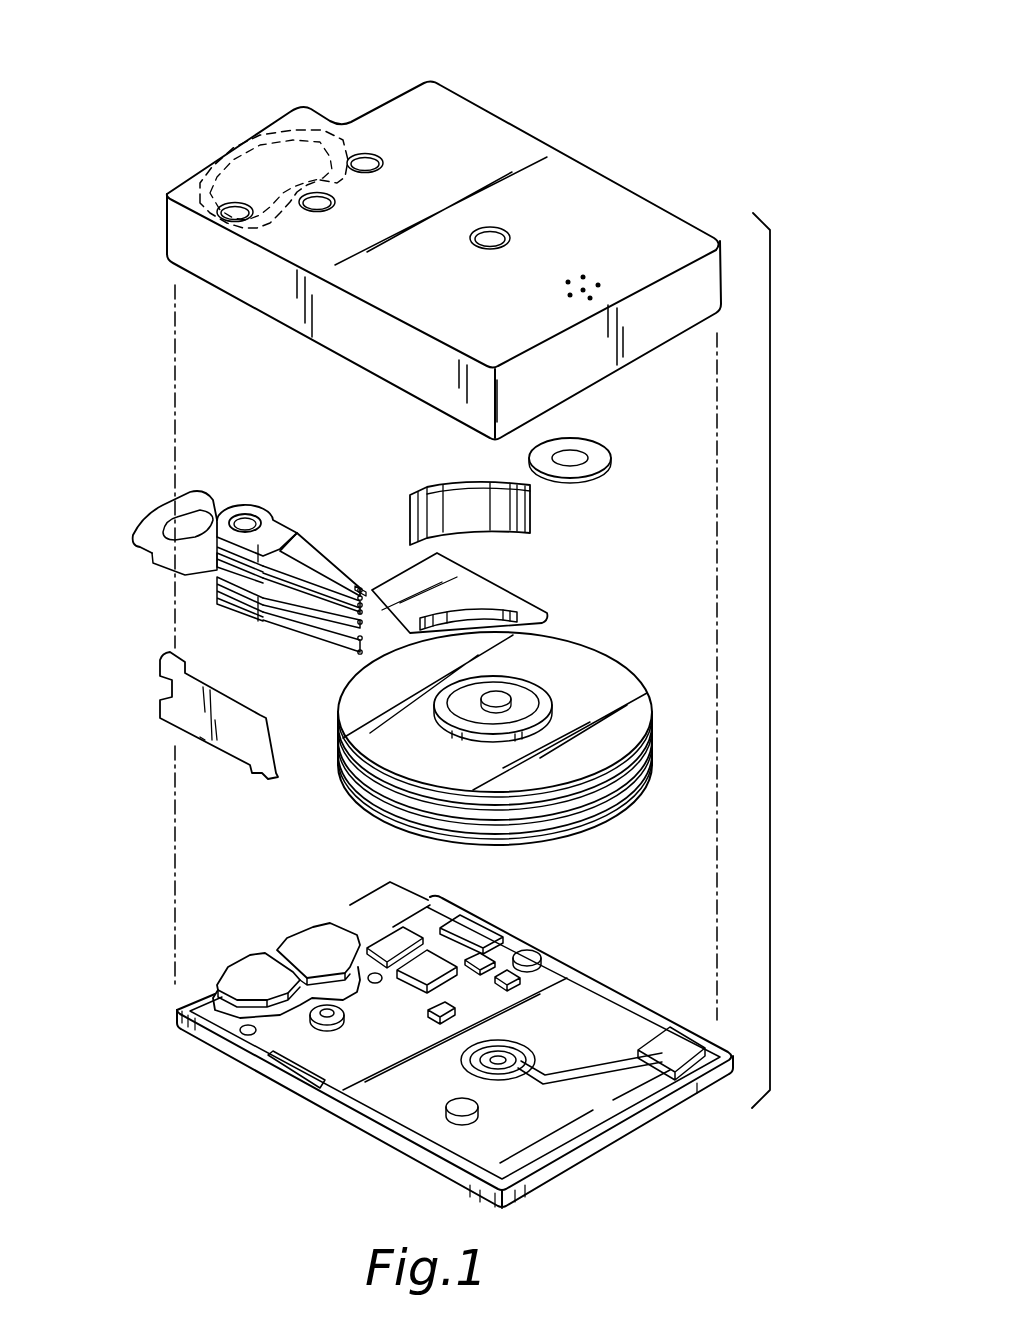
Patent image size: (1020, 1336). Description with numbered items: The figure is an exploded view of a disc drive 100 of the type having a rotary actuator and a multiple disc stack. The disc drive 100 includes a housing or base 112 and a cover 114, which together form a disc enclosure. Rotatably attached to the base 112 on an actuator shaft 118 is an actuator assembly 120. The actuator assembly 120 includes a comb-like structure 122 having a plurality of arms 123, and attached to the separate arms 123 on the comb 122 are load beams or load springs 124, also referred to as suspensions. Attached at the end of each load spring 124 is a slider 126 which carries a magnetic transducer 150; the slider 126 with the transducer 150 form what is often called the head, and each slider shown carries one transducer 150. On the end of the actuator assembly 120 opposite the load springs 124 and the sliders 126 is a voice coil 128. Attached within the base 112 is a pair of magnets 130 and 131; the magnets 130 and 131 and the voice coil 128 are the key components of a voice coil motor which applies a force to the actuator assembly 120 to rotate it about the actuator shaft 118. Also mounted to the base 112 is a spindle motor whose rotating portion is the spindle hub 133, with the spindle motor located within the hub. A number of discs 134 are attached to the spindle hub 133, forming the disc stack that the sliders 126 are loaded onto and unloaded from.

The disc drive 100 is at (583, 54).
The base 112 is at (620, 1013).
The cover 114 is at (607, 200).
The actuator shaft 118 is at (245, 516).
The actuator assembly 120 is at (198, 572).
The comb-like structure 122 is at (268, 623).
The arms 123 is at (307, 540).
The load springs 124 is at (313, 562).
The slider 126 is at (358, 586).
The voice coil 128 is at (152, 520).
The magnet 130 is at (278, 139).
The magnet 131 is at (238, 972).
The spindle hub 133 is at (500, 694).
The discs 134 is at (620, 685).
The magnetic transducer 150 is at (368, 593).